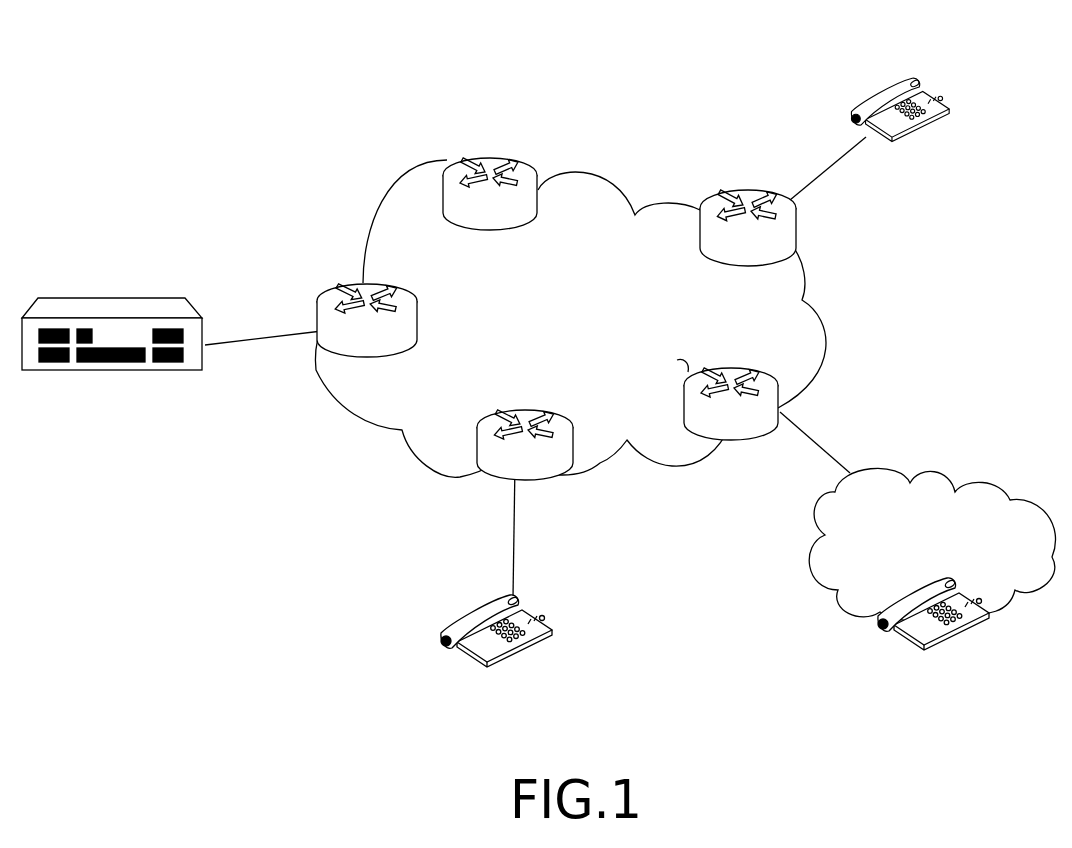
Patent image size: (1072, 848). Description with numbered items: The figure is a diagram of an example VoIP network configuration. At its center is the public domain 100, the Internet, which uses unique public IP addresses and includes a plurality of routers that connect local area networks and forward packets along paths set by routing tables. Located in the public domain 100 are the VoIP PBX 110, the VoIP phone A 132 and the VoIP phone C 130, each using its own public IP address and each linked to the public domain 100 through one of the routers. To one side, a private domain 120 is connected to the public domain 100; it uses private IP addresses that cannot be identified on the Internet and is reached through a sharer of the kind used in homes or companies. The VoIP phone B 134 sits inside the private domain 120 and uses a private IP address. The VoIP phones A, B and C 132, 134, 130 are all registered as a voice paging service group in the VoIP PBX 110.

The public domain 100 is at (570, 319).
The VoIP Private Branch eXchange (PBX) 110 is at (112, 368).
The private domain 120 is at (932, 526).
The VoIP phone C 130 is at (931, 81).
The VoIP phone A 132 is at (487, 659).
The VoIP phone B 134 is at (955, 645).